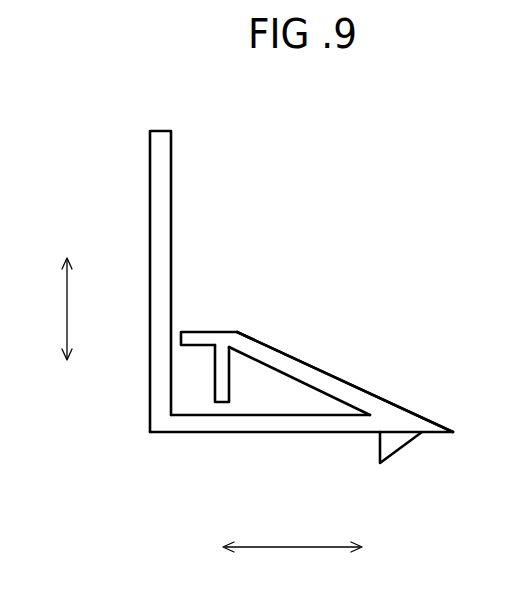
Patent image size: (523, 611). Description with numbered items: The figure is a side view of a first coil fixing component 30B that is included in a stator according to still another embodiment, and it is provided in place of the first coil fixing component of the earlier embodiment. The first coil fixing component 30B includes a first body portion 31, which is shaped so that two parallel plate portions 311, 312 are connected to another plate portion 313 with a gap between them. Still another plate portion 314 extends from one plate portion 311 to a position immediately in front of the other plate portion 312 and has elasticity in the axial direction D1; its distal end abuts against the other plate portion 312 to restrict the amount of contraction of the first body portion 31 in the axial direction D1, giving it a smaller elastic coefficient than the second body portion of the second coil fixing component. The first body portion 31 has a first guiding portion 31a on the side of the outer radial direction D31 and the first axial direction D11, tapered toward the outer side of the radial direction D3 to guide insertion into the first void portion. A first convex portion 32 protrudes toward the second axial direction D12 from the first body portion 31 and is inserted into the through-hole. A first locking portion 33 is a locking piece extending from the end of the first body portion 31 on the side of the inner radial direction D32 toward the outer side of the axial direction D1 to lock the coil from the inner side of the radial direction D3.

The first coil fixing component 30B is at (402, 192).
The first locking portion 33 is at (148, 175).
The first body portion 31 is at (193, 340).
The first guiding portion 31a is at (343, 380).
The plate portion 311 is at (313, 433).
The plate portion 312 is at (203, 337).
The plate portion 313 is at (307, 366).
The plate portion 314 is at (222, 388).
The first convex portion 32 is at (392, 442).
The axial direction D1 is at (48, 309).
The first axial direction D11 is at (66, 248).
The second axial direction D12 is at (67, 371).
The radial direction D3 is at (292, 562).
The outer radial direction D31 is at (381, 547).
The inner radial direction D32 is at (203, 547).